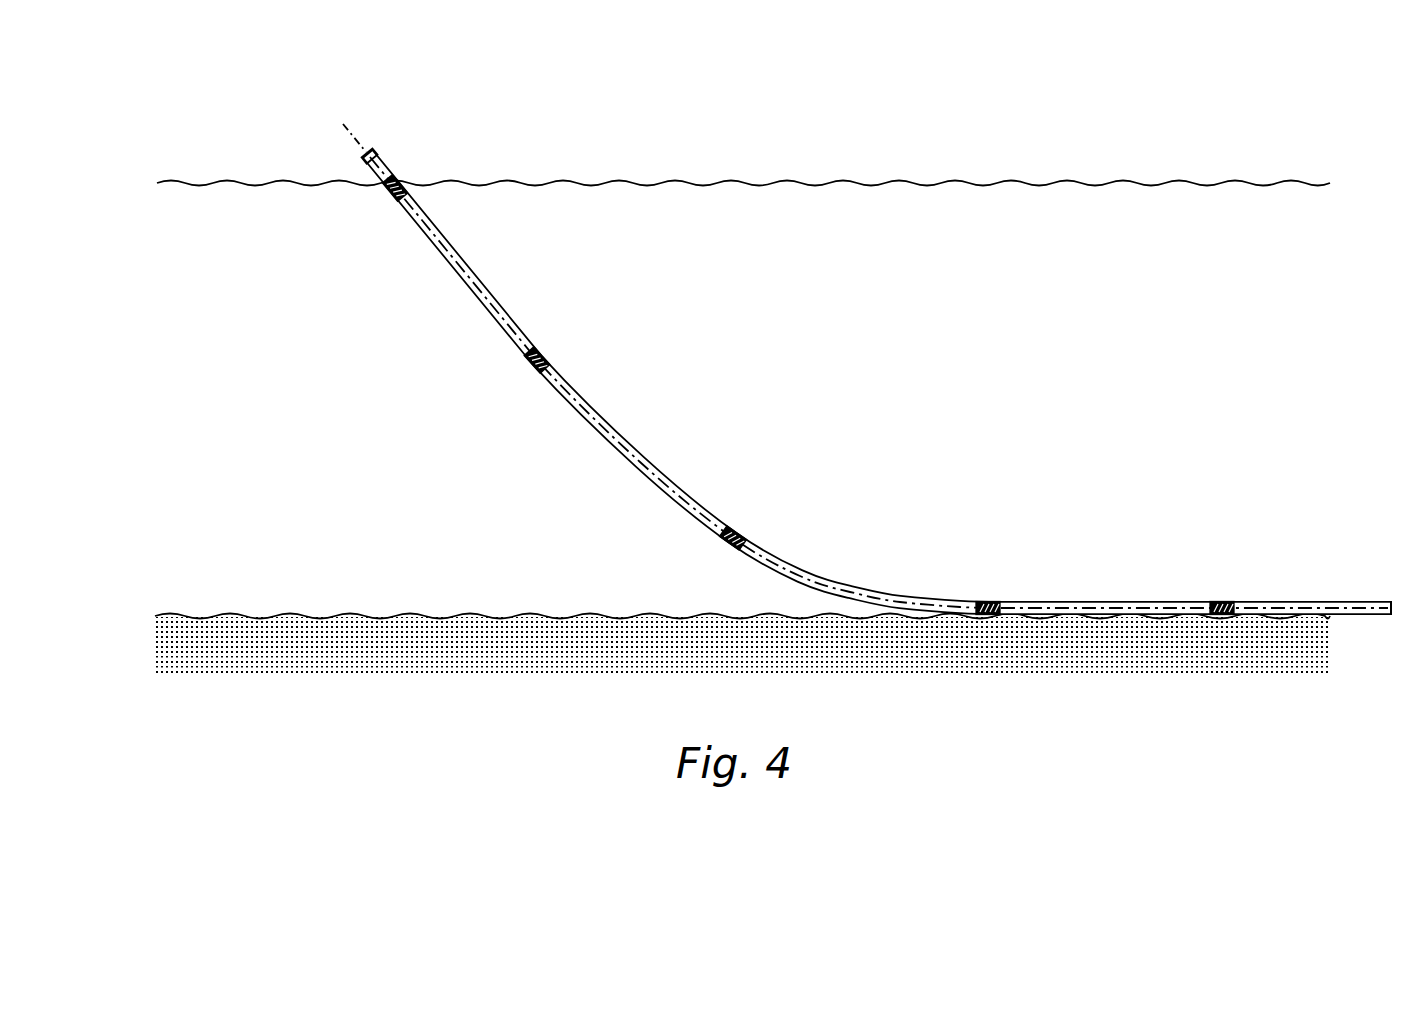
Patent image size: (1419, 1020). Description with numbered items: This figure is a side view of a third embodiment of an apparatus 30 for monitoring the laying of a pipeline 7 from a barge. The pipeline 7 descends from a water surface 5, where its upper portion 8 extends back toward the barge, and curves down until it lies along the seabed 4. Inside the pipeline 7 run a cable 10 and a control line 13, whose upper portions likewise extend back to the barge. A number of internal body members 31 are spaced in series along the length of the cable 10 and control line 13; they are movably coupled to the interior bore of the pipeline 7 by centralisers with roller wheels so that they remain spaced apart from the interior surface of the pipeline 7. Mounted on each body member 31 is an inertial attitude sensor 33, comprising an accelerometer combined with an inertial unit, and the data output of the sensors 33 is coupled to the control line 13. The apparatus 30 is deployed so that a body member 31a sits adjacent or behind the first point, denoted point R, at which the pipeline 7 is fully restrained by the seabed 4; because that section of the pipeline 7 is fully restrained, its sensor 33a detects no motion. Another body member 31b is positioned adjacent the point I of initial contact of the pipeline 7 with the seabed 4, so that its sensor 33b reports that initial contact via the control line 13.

The seabed 4 is at (322, 610).
The water surface 5 is at (785, 182).
The pipeline 7 is at (432, 253).
The upper portion 8 is at (388, 158).
The cable 10 is at (677, 311).
The control line 13 is at (353, 128).
The apparatus 30 is at (657, 415).
The internal body members 31 is at (636, 363).
The inertial attitude sensors 33 is at (412, 193).
The body member 31a is at (1309, 553).
The sensor 33a is at (1222, 603).
The body member 31b is at (1075, 553).
The sensor 33b is at (993, 600).
The point of initial contact I is at (978, 620).
The point of full restraint R is at (1082, 622).